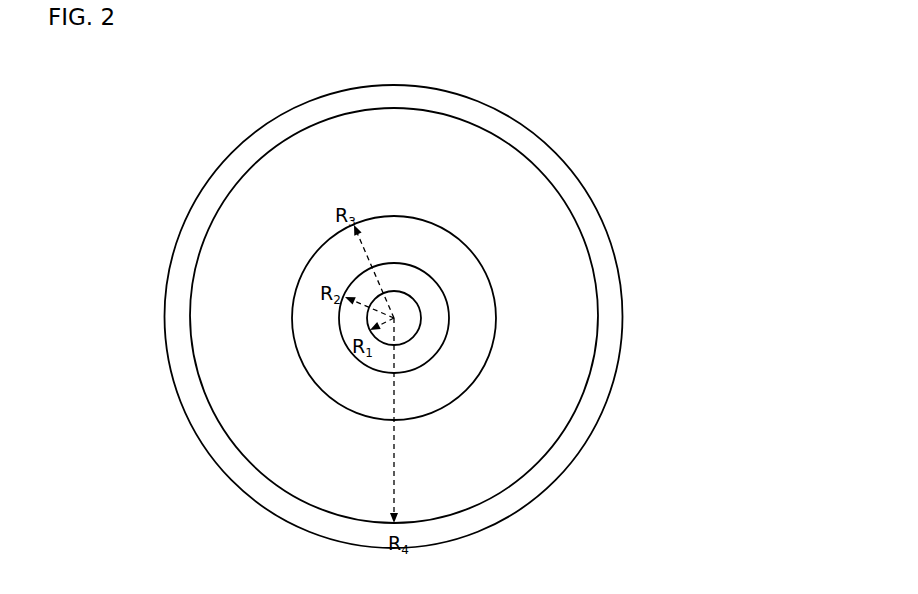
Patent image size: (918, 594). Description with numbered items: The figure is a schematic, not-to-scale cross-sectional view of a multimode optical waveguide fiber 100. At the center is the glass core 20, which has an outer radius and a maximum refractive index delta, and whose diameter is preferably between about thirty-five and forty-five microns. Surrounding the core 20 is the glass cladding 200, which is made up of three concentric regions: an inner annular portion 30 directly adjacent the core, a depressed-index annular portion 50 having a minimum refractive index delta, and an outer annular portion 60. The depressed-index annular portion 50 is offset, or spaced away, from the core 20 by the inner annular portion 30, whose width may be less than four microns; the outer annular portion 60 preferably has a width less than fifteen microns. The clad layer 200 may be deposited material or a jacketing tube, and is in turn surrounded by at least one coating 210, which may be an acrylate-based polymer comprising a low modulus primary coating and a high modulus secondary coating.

The connecting rod piston assembly 100 is at (137, 208).
The glass core 20 is at (405, 325).
The inner annular portion 30 is at (432, 320).
The depressed-index annular portion 50 is at (447, 286).
The outer annular portion 60 is at (517, 251).
The glass cladding 200 is at (731, 183).
The coating 210 is at (190, 400).